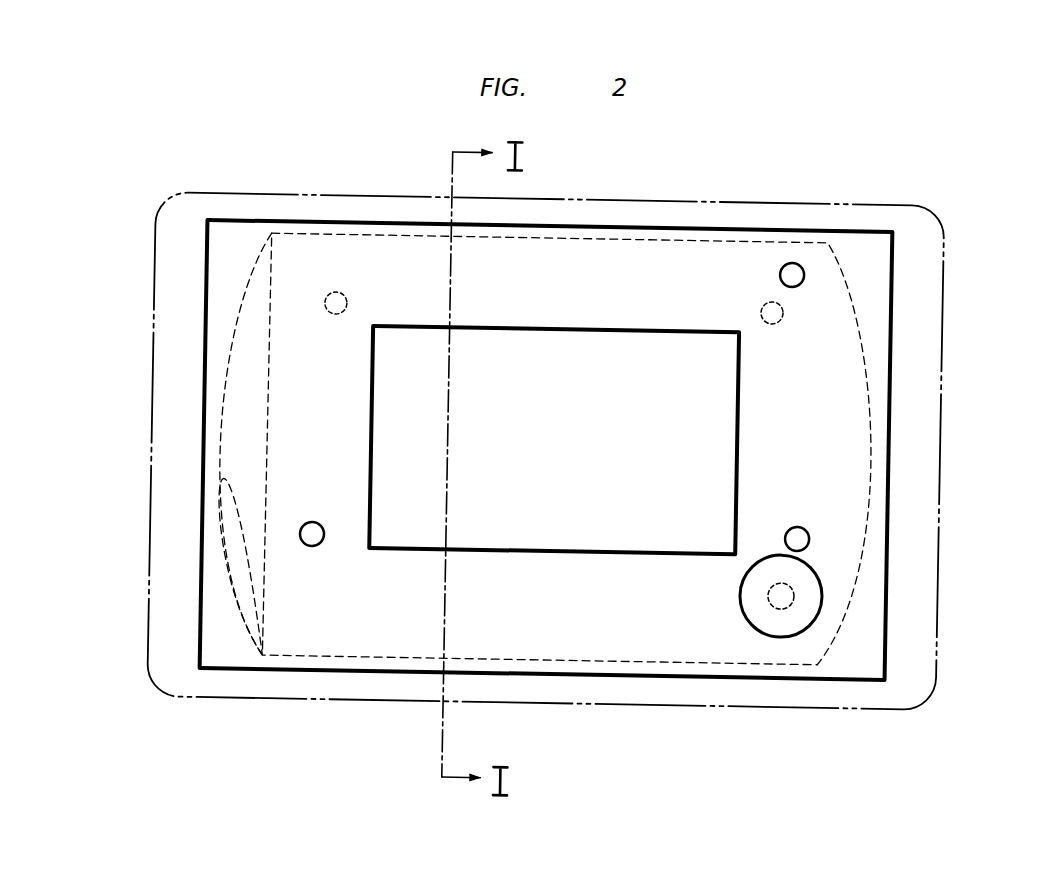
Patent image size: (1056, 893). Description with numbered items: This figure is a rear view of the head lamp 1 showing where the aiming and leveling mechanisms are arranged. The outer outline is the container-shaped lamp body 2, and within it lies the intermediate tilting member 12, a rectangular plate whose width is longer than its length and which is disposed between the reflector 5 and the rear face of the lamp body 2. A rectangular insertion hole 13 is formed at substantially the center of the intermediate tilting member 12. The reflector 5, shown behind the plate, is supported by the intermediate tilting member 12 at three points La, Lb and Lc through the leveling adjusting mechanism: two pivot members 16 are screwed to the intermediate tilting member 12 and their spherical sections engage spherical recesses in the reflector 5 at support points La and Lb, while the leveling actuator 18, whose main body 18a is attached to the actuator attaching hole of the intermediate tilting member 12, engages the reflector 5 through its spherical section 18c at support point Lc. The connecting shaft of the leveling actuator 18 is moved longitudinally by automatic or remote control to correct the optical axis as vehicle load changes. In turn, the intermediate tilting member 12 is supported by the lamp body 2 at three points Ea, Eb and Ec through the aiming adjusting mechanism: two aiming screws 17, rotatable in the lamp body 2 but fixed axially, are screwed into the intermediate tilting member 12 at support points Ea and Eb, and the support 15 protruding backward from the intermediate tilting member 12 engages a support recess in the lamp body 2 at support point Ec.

The head lamp 1 is at (949, 199).
The lamp body 2 is at (940, 345).
The reflector 5 is at (857, 557).
The intermediate tilting member 12 is at (846, 657).
The insertion hole 13 is at (480, 544).
The support 15 is at (798, 523).
The pivot member 16 is at (344, 302).
The aiming screw 17 is at (320, 550).
The leveling actuator 18 is at (768, 618).
The main body 18a is at (787, 621).
The spherical section 18c is at (770, 593).
The support point Ea is at (785, 259).
The support point Eb is at (305, 526).
The support point Ec is at (813, 527).
The support point La is at (776, 323).
The support point Lb is at (335, 295).
The support point Lc is at (828, 592).